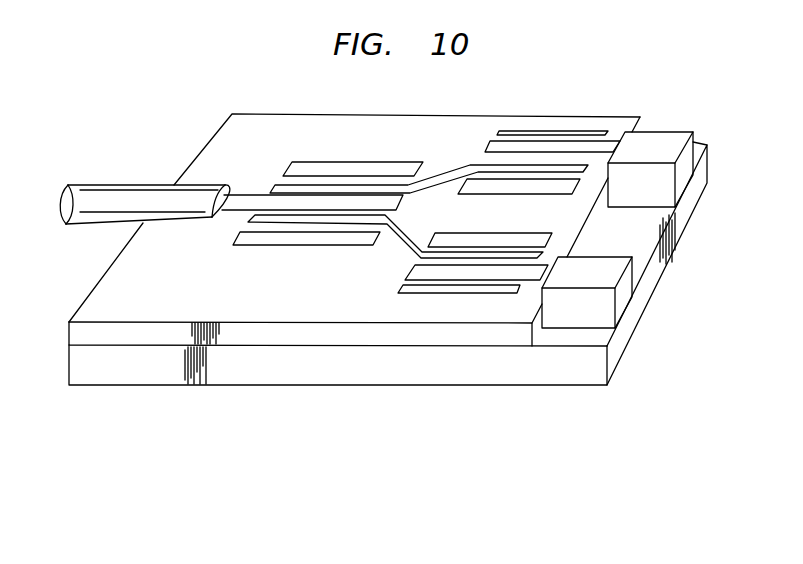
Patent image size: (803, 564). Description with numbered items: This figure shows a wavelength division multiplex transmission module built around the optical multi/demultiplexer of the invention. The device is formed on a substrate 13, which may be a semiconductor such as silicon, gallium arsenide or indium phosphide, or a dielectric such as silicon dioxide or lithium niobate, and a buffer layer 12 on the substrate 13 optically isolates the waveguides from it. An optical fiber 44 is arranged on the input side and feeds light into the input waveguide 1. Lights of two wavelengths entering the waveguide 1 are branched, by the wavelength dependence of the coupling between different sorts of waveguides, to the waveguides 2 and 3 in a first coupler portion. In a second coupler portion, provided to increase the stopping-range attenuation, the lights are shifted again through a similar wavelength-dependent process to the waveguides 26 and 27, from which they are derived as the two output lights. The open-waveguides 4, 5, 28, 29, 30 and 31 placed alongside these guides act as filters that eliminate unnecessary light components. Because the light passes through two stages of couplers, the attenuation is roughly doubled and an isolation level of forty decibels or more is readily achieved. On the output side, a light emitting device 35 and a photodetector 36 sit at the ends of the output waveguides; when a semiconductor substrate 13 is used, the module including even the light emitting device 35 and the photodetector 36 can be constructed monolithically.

The waveguide 1 is at (244, 195).
The waveguide 2 is at (434, 176).
The waveguide 3 is at (401, 230).
The open-waveguide 4 is at (334, 166).
The open-waveguide 5 is at (291, 237).
The buffer layer 12 is at (74, 330).
The substrate 13 is at (167, 377).
The waveguide 26 is at (490, 148).
The waveguide 27 is at (410, 266).
The open-waveguide 28 is at (520, 130).
The open-waveguide 29 is at (498, 187).
The open-waveguide 30 is at (493, 237).
The open-waveguide 31 is at (425, 287).
The light emitting device 35 is at (652, 137).
The photodetector 36 is at (598, 260).
The optical fiber 44 is at (130, 186).